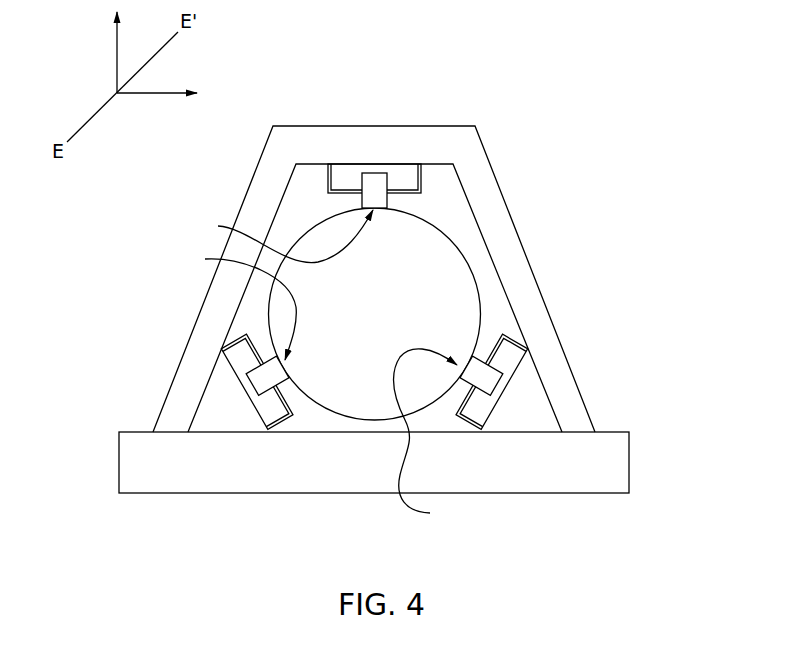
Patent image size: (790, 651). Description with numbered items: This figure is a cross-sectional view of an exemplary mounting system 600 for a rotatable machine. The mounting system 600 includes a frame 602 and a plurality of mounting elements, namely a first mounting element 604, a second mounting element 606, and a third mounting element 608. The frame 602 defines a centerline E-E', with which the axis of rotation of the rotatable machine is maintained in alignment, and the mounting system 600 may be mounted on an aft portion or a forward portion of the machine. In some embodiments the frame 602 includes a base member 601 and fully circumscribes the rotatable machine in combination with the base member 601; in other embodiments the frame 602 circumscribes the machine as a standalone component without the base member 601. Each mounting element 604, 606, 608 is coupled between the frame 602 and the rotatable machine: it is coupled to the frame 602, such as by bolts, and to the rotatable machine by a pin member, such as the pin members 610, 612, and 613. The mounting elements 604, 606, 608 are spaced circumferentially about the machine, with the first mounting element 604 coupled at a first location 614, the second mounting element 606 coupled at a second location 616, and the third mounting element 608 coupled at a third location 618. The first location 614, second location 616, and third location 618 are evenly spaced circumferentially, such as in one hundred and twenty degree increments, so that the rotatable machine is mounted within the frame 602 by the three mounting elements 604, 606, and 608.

The mounting system 600 is at (565, 87).
The base member 601 is at (625, 493).
The frame 602 is at (544, 257).
The first mounting element 604 is at (423, 179).
The second mounting element 606 is at (518, 342).
The third mounting element 608 is at (289, 418).
The pin member 610 is at (377, 173).
The pin member 612 is at (500, 386).
The pin member 613 is at (248, 390).
The first location 614 is at (277, 236).
The second location 616 is at (430, 438).
The third location 618 is at (233, 304).